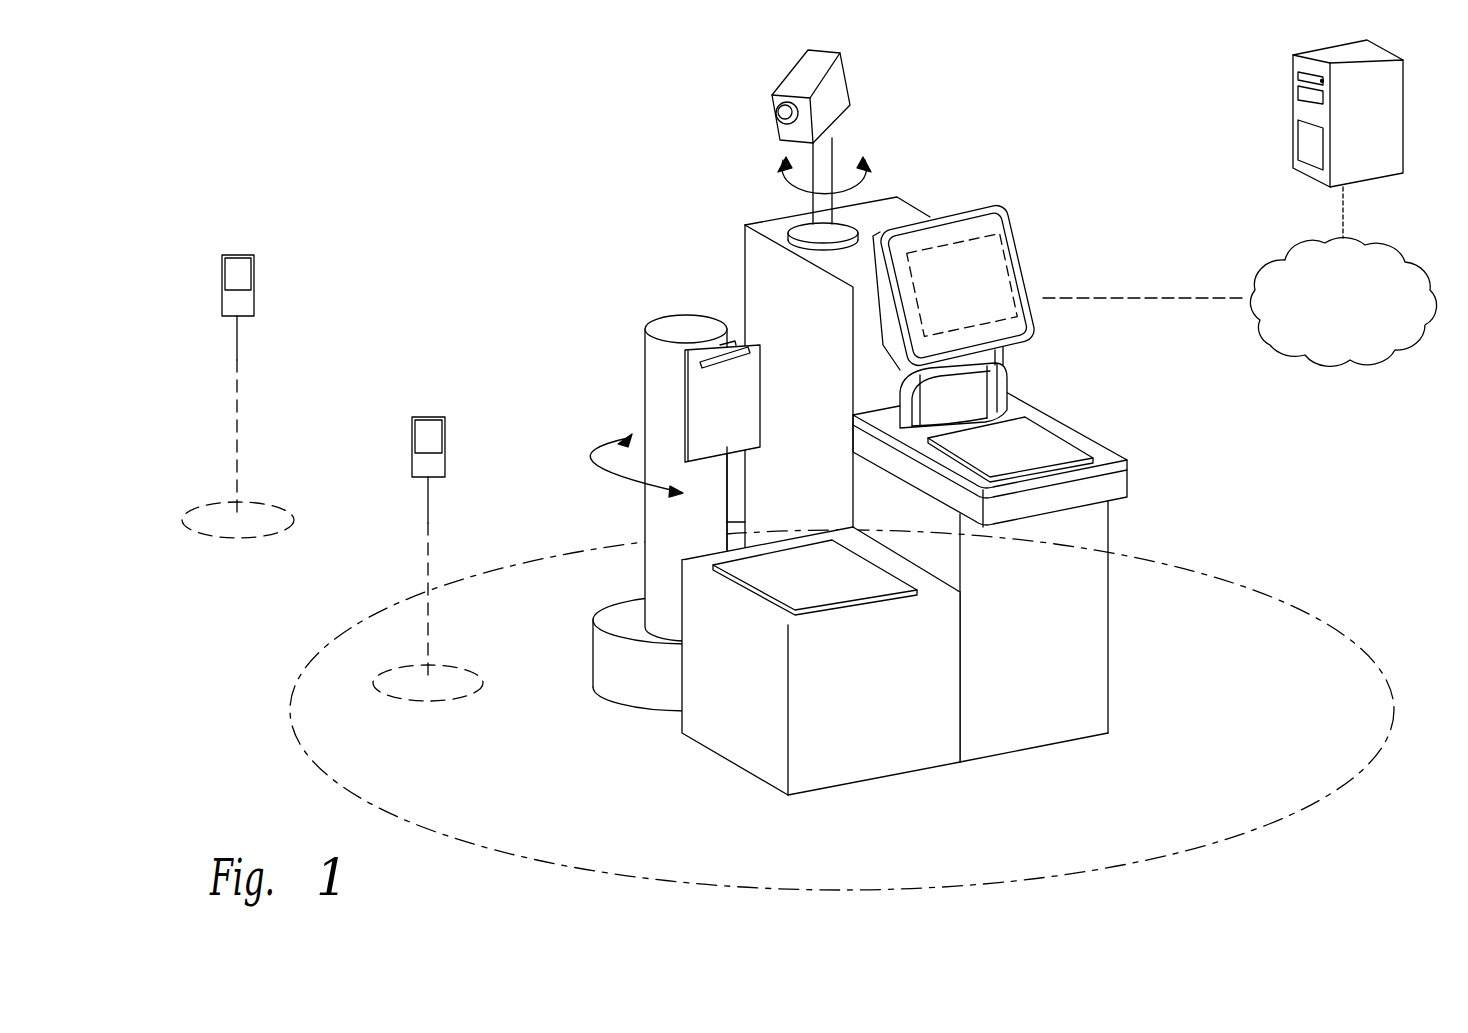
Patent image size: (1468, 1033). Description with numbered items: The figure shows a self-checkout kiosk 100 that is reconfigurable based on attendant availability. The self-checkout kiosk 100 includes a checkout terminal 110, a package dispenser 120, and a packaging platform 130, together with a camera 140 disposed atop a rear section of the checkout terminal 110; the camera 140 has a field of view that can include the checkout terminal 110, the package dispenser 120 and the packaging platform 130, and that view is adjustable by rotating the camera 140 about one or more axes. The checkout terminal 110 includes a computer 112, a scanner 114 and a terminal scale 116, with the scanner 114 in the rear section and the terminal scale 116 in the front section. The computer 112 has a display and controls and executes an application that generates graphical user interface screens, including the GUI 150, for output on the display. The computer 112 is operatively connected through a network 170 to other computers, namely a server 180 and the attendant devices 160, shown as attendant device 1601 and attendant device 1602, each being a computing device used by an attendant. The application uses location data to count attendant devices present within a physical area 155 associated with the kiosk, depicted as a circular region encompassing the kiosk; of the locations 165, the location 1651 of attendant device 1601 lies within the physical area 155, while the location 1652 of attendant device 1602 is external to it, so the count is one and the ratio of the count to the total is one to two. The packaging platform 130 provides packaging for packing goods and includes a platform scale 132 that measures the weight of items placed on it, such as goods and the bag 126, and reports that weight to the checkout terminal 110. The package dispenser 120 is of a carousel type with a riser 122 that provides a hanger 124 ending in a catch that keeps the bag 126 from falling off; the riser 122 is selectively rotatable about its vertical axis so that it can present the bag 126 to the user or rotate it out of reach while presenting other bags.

The self-checkout kiosk 100 is at (542, 98).
The checkout terminal 110 is at (1148, 494).
The computer 112 is at (955, 212).
The scanner 114 is at (968, 393).
The terminal scale 116 is at (1040, 452).
The package dispenser 120 is at (679, 224).
The riser 122 is at (687, 323).
The hanger 124 is at (690, 353).
The bag 126 is at (700, 402).
The packaging platform 130 is at (878, 768).
The platform scale 132 is at (820, 582).
The camera 140 is at (841, 86).
The GUI 150 is at (1000, 250).
The physical area 155 is at (963, 880).
The attendant devices 160 is at (263, 432).
The attendant device 1601 is at (413, 433).
The attendant device 1602 is at (223, 271).
The locations 165 is at (371, 632).
The location 1651 is at (409, 701).
The location 1652 is at (219, 538).
The network 170 is at (1373, 238).
The server 180 is at (1293, 80).